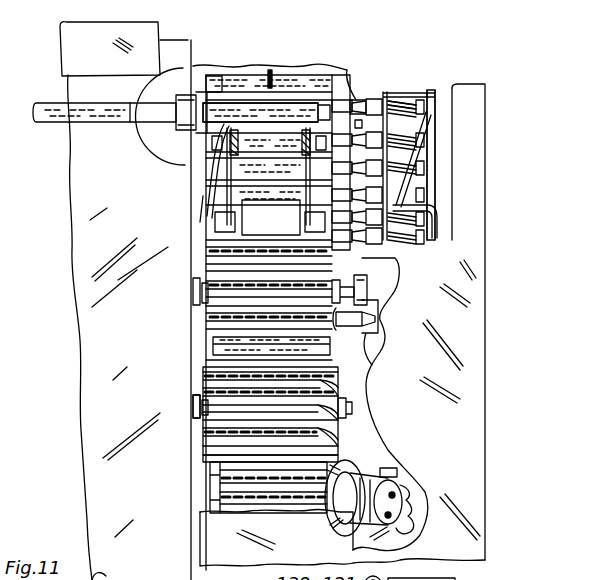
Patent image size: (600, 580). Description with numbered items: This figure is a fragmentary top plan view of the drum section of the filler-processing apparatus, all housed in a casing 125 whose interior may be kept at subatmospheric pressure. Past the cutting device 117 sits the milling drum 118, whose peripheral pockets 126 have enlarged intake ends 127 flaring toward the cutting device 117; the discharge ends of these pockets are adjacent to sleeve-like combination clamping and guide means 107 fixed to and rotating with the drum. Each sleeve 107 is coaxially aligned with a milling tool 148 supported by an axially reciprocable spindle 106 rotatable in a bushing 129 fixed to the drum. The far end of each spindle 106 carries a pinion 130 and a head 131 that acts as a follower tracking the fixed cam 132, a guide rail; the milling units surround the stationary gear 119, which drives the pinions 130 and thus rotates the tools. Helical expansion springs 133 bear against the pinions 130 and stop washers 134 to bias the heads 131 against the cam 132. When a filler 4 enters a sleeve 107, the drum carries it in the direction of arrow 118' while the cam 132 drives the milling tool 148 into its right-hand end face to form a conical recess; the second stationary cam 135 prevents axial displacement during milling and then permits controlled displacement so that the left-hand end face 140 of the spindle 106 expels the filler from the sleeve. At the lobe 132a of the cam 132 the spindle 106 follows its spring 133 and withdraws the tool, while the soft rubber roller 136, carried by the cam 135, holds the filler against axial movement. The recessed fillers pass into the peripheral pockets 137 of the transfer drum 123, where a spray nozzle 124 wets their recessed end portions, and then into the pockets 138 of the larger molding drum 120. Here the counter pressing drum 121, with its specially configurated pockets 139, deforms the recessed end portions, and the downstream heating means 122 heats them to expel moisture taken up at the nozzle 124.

The cutting device 117 is at (92, 63).
The filler 4 is at (56, 125).
The milling drum 118 is at (171, 118).
The intake ends 127 is at (213, 77).
The arrow 118' is at (256, 54).
The peripheral pockets 126 is at (292, 102).
The combination clamping and guide means 107 is at (337, 95).
The milling tool 148 is at (358, 100).
The bushings 129 is at (378, 100).
The spindle 106 is at (405, 95).
The stationary gear 119 is at (420, 95).
The pinion 130 is at (430, 105).
The cam 132 is at (430, 165).
The lobe 132a is at (420, 183).
The head 131 is at (426, 216).
The expansion springs 133 is at (398, 245).
The stop washers 134 is at (390, 232).
The second stationary cam 135 is at (196, 206).
The soft rubber roller 136 is at (290, 229).
The peripheral pockets 137 is at (216, 266).
The left-hand end face 140 is at (366, 242).
The transfer drum 123 is at (208, 351).
The spray nozzle 124 is at (376, 358).
The casing 125 is at (485, 346).
The peripheral pockets 139 is at (343, 396).
The counter pressing drum 121 is at (200, 436).
The peripheral pockets 138 is at (208, 479).
The molding drum 120 is at (208, 496).
The heating means 122 is at (400, 490).